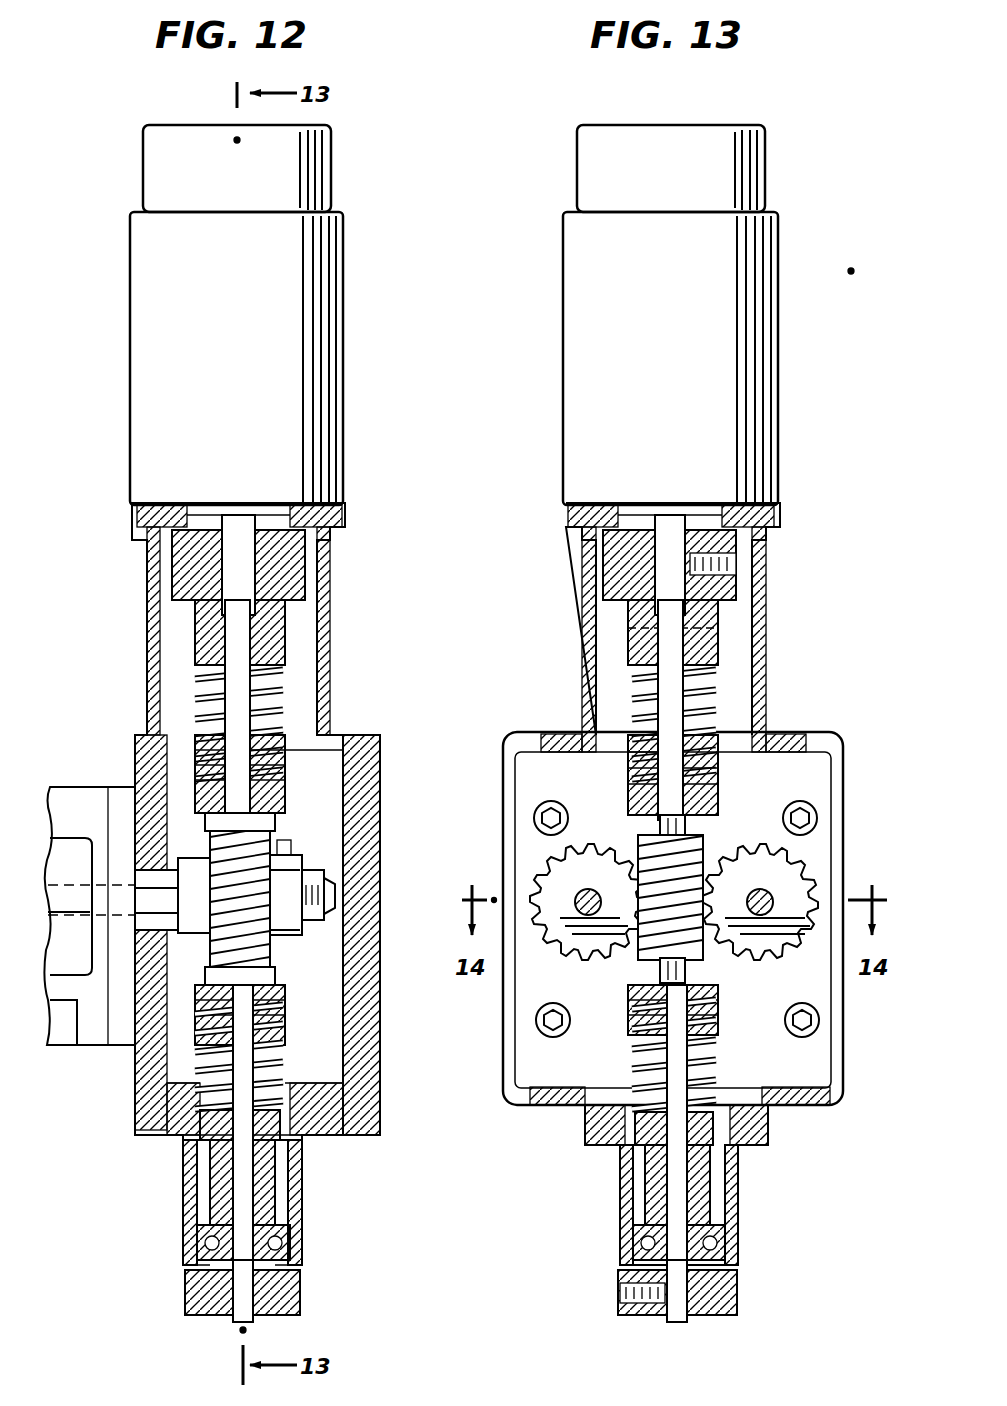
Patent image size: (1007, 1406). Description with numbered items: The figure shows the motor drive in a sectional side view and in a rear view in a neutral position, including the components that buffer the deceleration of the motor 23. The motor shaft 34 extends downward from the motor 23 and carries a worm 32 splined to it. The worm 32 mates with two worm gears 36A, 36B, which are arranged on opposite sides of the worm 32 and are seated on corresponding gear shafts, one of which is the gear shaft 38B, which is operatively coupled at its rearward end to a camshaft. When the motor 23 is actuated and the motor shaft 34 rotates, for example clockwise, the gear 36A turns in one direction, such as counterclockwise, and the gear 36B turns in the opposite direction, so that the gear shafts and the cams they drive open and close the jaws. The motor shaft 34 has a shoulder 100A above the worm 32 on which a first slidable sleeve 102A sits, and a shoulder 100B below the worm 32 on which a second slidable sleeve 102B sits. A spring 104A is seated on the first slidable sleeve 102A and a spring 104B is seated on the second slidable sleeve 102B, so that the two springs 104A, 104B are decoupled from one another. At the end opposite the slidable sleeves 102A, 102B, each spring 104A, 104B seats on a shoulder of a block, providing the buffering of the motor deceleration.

In FIG. 12, the motor 23 is at (126, 298).
In FIG. 13, the motor 23 is at (782, 282).
In FIG. 13, the worm 32 is at (642, 836).
In FIG. 12, the motor shaft 34 is at (247, 655).
In FIG. 13, the motor shaft 34 is at (675, 655).
In FIG. 13, the worm gear 36A is at (790, 880).
In FIG. 13, the worm gear 36B is at (560, 880).
In FIG. 12, the gear shaft 38B is at (73, 900).
In FIG. 13, the shoulder 100A is at (690, 821).
In FIG. 13, the shoulder 100B is at (700, 972).
In FIG. 12, the first slidable sleeve 102A is at (205, 805).
In FIG. 13, the first slidable sleeve 102A is at (705, 800).
In FIG. 12, the second slidable sleeve 102B is at (205, 1000).
In FIG. 13, the second slidable sleeve 102B is at (716, 1023).
In FIG. 12, the spring 104A is at (200, 715).
In FIG. 13, the spring 104A is at (710, 715).
In FIG. 12, the spring 104B is at (200, 1105).
In FIG. 13, the spring 104B is at (725, 1105).